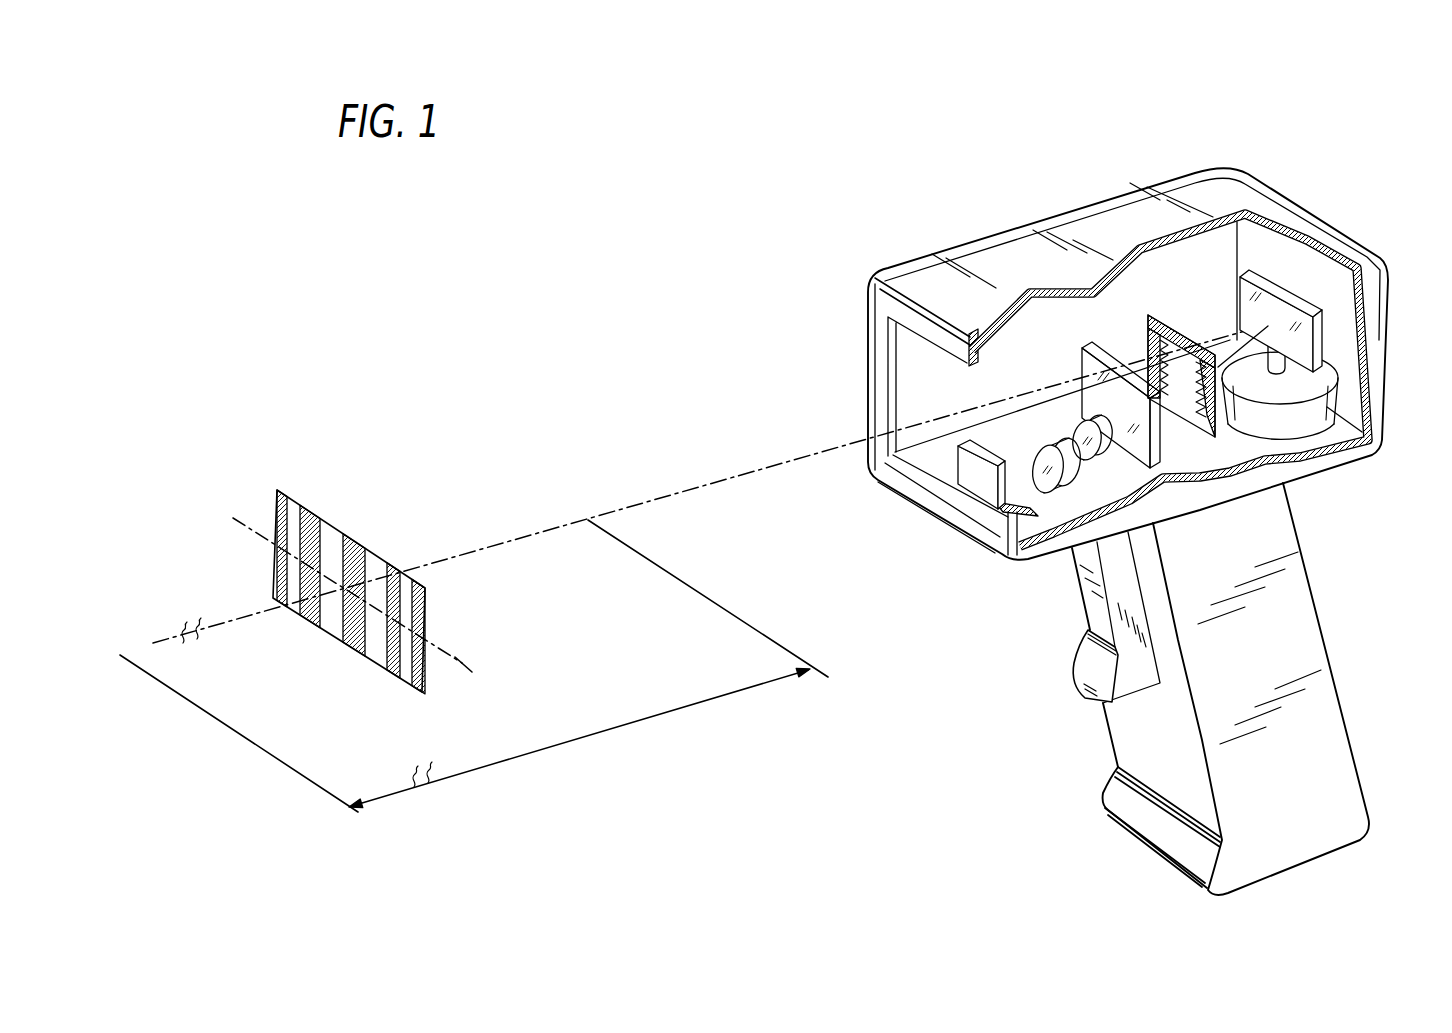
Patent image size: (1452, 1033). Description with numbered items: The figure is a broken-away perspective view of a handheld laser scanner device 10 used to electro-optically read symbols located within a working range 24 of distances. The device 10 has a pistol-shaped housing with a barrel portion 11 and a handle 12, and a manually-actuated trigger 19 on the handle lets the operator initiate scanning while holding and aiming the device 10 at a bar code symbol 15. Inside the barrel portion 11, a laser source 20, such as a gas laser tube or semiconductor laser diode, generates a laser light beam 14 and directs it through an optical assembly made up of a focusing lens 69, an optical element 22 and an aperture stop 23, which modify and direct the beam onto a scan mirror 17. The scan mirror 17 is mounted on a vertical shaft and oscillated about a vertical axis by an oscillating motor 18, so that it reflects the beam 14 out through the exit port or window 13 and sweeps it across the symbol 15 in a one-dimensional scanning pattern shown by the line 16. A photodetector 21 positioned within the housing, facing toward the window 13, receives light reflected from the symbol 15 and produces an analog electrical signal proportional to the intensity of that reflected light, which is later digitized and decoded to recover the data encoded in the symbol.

The handheld laser scanner device 10 is at (1000, 145).
The barrel portion 11 is at (903, 275).
The handle 12 is at (1316, 614).
The window 13 is at (935, 387).
The laser light beam 14 is at (761, 468).
The bar code symbol 15 is at (332, 528).
The line 16 is at (462, 660).
The scan mirror 17 is at (1273, 280).
The oscillating motor 18 is at (1327, 405).
The trigger 19 is at (1085, 673).
The laser source 20 is at (1052, 492).
The photodetector 21 is at (973, 480).
The optical element 22 is at (1095, 348).
The aperture stop 23 is at (1164, 326).
The working range 24 is at (598, 745).
The focusing lens 69 is at (1097, 458).